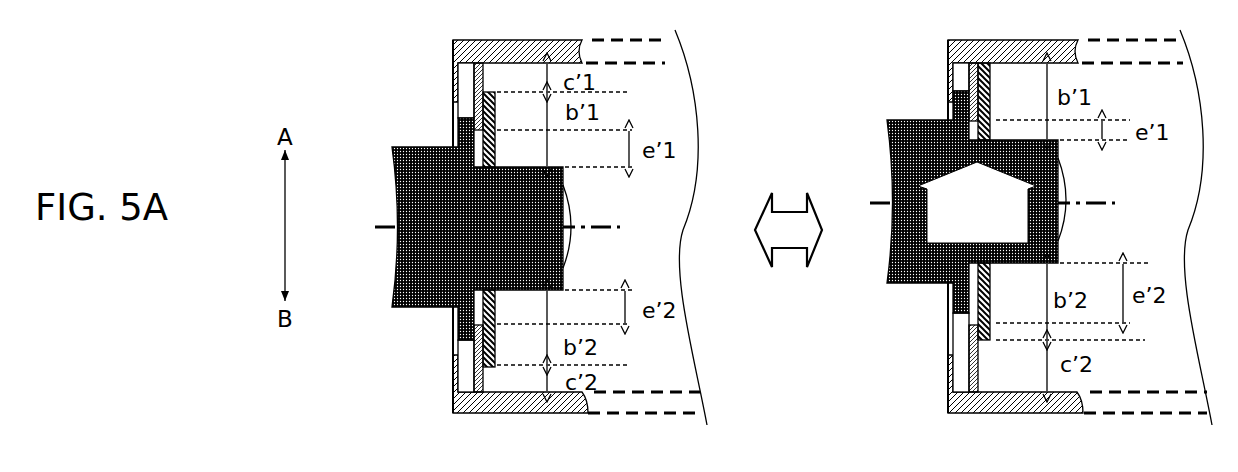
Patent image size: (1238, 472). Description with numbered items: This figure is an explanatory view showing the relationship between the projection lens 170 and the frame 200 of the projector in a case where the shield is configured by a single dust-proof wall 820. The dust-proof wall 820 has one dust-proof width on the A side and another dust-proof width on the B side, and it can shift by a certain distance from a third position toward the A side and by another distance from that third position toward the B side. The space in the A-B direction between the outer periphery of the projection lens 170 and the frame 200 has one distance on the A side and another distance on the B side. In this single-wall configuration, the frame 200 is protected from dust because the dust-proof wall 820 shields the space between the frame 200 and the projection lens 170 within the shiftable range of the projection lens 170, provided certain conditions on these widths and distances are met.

The frame 200 is at (453, 53).
The projection lens 170 is at (393, 182).
The dust-proof wall 820 is at (480, 343).